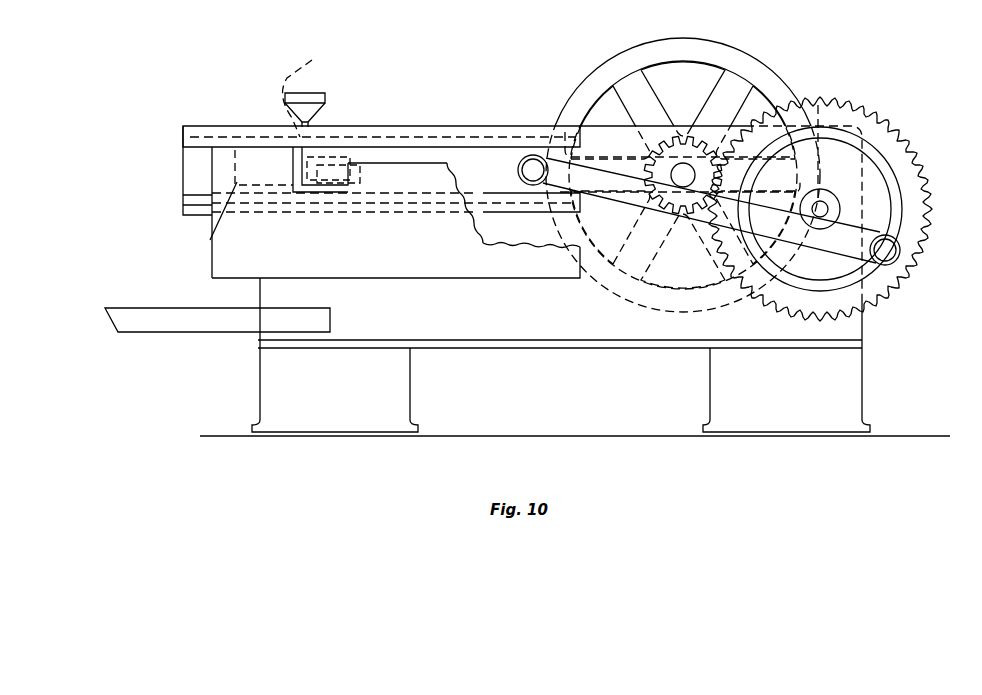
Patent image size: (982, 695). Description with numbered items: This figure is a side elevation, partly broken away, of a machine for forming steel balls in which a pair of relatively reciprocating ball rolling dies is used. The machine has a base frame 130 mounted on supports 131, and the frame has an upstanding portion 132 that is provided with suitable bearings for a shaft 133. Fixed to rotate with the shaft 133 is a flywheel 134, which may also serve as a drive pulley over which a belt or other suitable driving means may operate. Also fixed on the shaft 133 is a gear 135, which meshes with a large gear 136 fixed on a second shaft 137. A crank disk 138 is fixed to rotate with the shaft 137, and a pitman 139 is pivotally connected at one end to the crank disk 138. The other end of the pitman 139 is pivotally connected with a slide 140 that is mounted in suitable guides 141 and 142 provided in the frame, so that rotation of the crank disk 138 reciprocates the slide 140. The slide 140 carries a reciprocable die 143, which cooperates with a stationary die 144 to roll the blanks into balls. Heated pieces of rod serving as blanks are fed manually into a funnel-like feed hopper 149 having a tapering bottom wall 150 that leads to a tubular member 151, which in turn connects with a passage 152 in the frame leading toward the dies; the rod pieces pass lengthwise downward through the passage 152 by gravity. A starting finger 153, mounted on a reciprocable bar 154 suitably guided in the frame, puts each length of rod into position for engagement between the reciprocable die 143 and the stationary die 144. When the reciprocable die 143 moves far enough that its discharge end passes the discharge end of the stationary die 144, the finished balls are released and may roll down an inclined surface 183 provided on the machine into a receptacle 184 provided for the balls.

The base frame 130 is at (558, 332).
The supports 131 is at (270, 386).
The upstanding portion 132 is at (610, 135).
The shaft 133 is at (683, 172).
The flywheel 134 is at (760, 72).
The gear 135 is at (665, 137).
The large gear 136 is at (860, 108).
The shaft 137 is at (830, 209).
The crank disk 138 is at (873, 207).
The pitman 139 is at (832, 212).
The slide 140 is at (520, 150).
The guide 141 is at (210, 127).
The guide 142 is at (200, 210).
The reciprocable die 143 is at (338, 153).
The stationary die 144 is at (252, 165).
The feed hopper 149 is at (320, 98).
The tapering bottom wall 150 is at (322, 106).
The tubular member 151 is at (307, 122).
The passage 152 is at (308, 90).
The starting finger 153 is at (365, 163).
The reciprocable bar 154 is at (413, 173).
The inclined surface 183 is at (233, 183).
The receptacle 184 is at (172, 330).